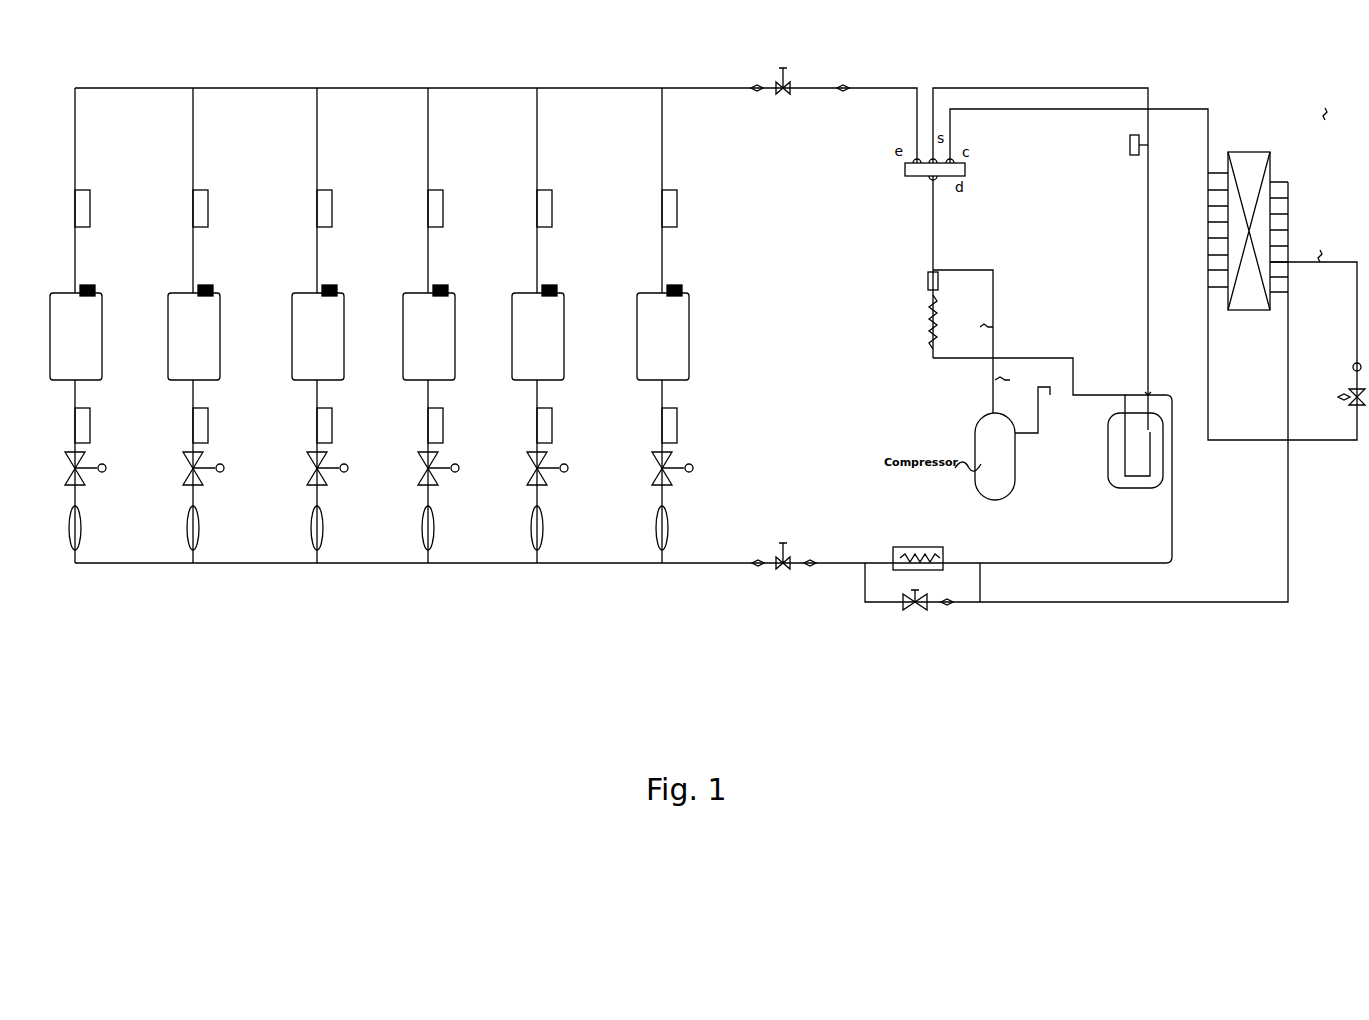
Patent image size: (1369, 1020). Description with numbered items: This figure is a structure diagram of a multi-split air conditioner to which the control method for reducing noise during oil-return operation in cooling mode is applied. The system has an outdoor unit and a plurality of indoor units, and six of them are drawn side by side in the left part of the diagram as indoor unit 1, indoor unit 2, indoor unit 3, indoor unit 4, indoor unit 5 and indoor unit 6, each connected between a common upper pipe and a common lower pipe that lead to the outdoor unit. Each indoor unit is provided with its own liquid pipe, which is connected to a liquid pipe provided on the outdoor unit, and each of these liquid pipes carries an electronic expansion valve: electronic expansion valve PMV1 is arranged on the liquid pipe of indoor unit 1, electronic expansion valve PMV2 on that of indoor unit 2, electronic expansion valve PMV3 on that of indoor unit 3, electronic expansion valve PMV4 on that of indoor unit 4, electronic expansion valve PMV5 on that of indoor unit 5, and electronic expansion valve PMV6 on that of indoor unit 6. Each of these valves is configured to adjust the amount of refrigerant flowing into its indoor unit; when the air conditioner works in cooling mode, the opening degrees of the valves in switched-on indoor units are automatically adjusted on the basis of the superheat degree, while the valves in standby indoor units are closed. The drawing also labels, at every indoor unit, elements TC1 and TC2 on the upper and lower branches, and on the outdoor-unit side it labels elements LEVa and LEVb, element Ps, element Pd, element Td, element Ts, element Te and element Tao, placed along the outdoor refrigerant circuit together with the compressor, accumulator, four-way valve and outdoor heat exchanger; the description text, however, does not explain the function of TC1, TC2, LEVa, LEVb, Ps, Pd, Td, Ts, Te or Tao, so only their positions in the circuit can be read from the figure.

The indoor unit 1 is at (688, 325).
The indoor unit 2 is at (563, 325).
The indoor unit 3 is at (454, 325).
The indoor unit 4 is at (343, 325).
The indoor unit 5 is at (219, 325).
The indoor unit 6 is at (101, 325).
The indoor heat exchanger inlet temperature sensor TC1 is at (396, 208).
The indoor heat exchanger outlet temperature sensor TC2 is at (391, 421).
The electronic expansion valve PMV1 is at (695, 477).
The electronic expansion valve PMV2 is at (570, 477).
The electronic expansion valve PMV3 is at (461, 477).
The electronic expansion valve PMV4 is at (350, 477).
The electronic expansion valve PMV5 is at (226, 477).
The electronic expansion valve PMV6 is at (108, 477).
The linear expansion valve a LEVa is at (923, 593).
The linear expansion valve b LEVb is at (1337, 400).
The suction pressure sensor Ps is at (1126, 139).
The discharge pressure sensor Pd is at (973, 334).
The discharge temperature sensor Td is at (985, 383).
The suction temperature sensor Ts is at (1130, 384).
The outdoor heat exchanger temperature sensor Te is at (1308, 245).
The outdoor air temperature sensor Tao is at (1308, 119).